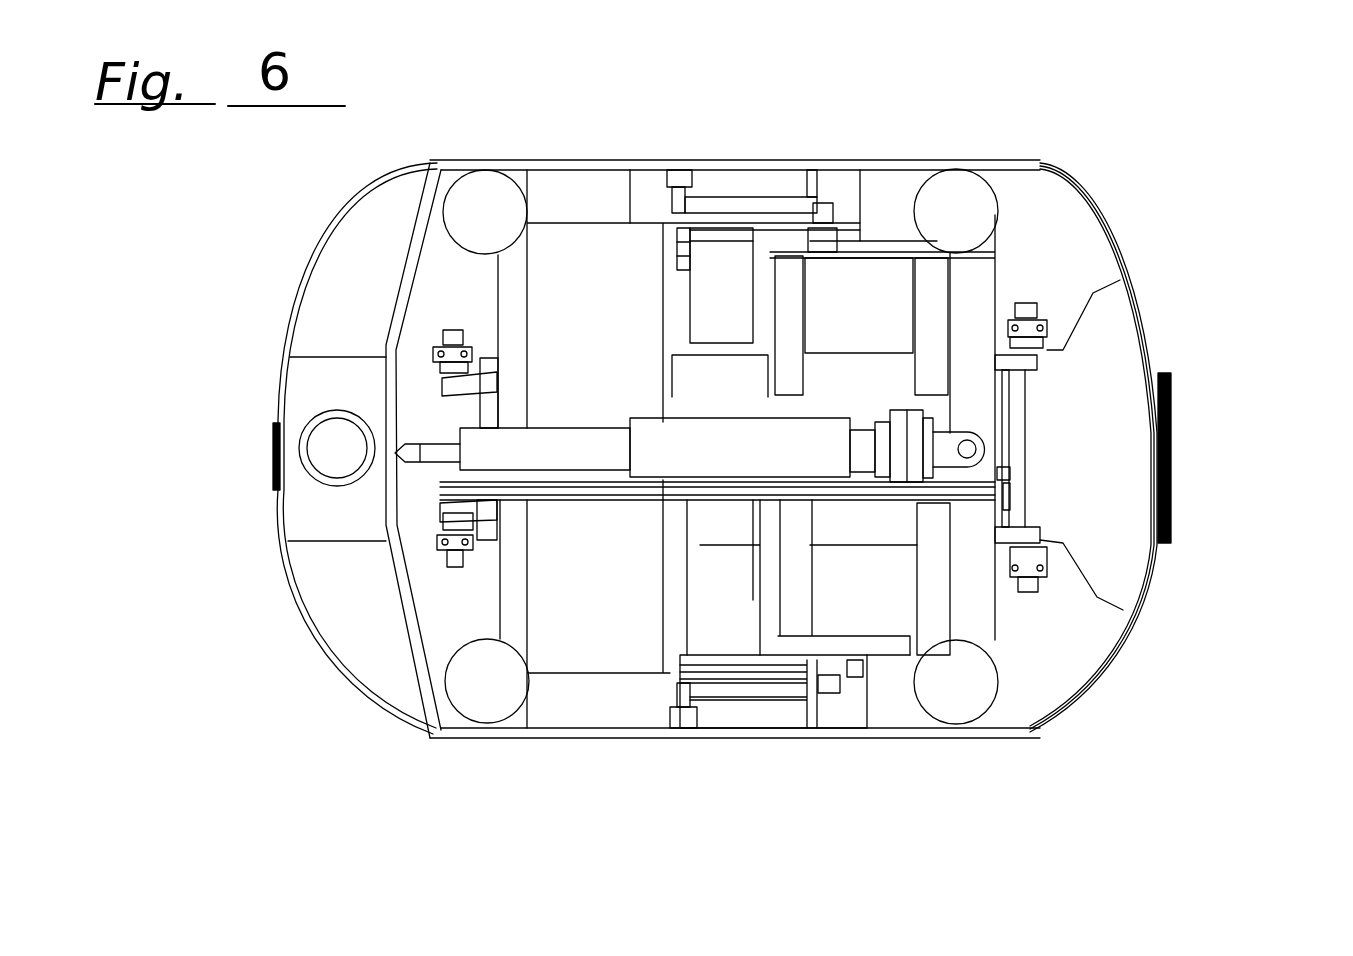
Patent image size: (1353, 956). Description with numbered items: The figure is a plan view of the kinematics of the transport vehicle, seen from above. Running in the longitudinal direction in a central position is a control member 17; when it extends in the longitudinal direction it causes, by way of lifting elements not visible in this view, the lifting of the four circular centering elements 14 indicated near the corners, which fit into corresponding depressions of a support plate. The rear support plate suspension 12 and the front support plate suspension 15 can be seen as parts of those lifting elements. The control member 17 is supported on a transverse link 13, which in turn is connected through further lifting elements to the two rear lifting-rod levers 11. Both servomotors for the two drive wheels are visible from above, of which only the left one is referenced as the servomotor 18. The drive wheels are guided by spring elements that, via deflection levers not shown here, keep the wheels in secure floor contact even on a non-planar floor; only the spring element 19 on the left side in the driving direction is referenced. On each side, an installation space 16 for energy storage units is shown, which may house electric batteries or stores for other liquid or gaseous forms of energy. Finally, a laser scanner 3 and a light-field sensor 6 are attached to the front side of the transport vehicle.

The laser scanner 3 is at (325, 487).
The light-field sensor 6 is at (297, 449).
The rear lifting-rod levers 11 is at (1040, 363).
The rear support plate suspension 12 is at (1050, 332).
The transverse link 13 is at (970, 284).
The centering elements 14 is at (950, 202).
The front support plate suspension 15 is at (450, 540).
The installation space for energy storage units 16 is at (578, 546).
The control member 17 is at (697, 442).
The servomotor 18 is at (723, 620).
The spring element 19 is at (803, 690).